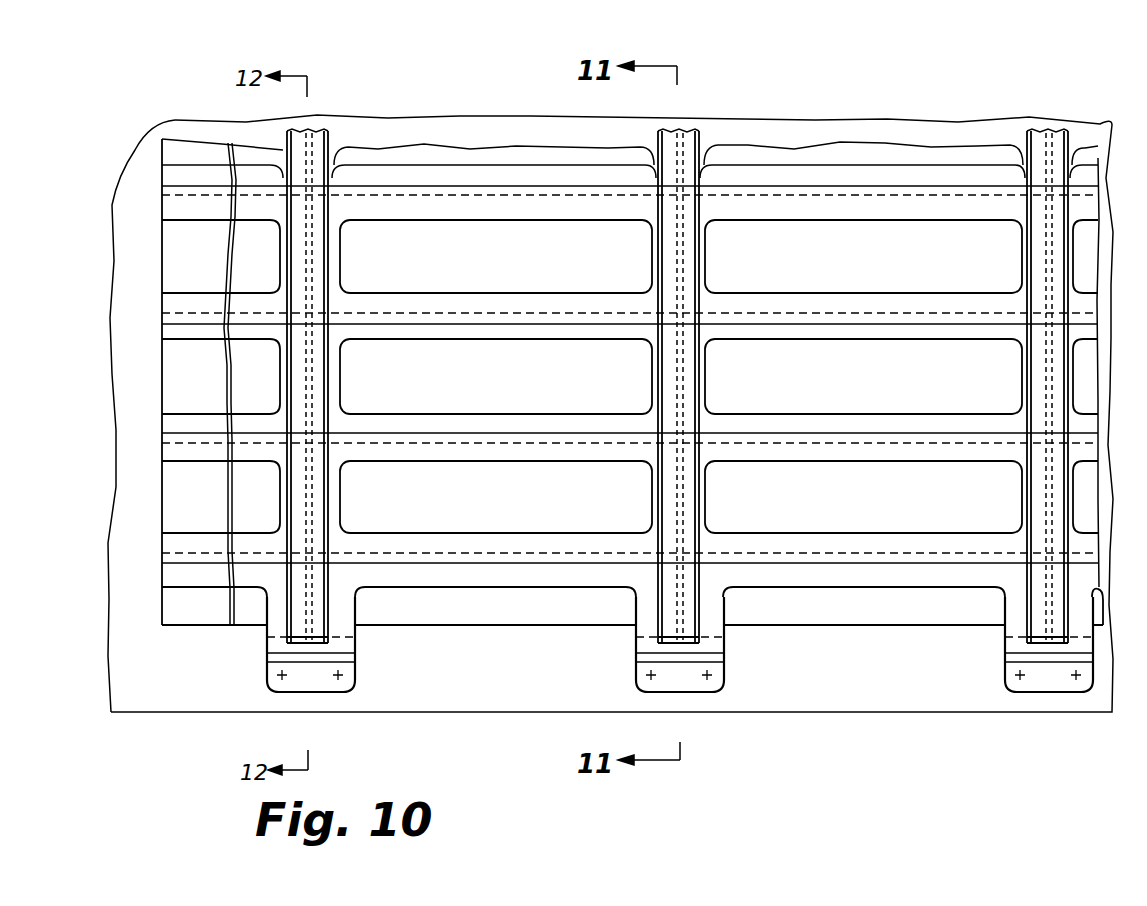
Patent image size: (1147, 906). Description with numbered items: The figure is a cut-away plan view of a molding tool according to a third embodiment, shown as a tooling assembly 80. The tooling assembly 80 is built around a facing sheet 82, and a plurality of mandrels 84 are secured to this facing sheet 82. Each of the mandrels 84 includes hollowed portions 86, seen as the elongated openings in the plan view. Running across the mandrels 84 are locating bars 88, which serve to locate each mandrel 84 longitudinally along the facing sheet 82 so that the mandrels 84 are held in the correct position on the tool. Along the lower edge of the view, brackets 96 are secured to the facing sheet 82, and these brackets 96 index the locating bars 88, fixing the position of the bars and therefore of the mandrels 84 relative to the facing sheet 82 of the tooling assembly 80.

The tooling assembly 80 is at (212, 100).
The facing sheet 82 is at (140, 175).
The mandrels 84 is at (421, 345).
The hollowed portions 86 is at (205, 222).
The locating bars 88 is at (323, 172).
The brackets 96 is at (267, 670).